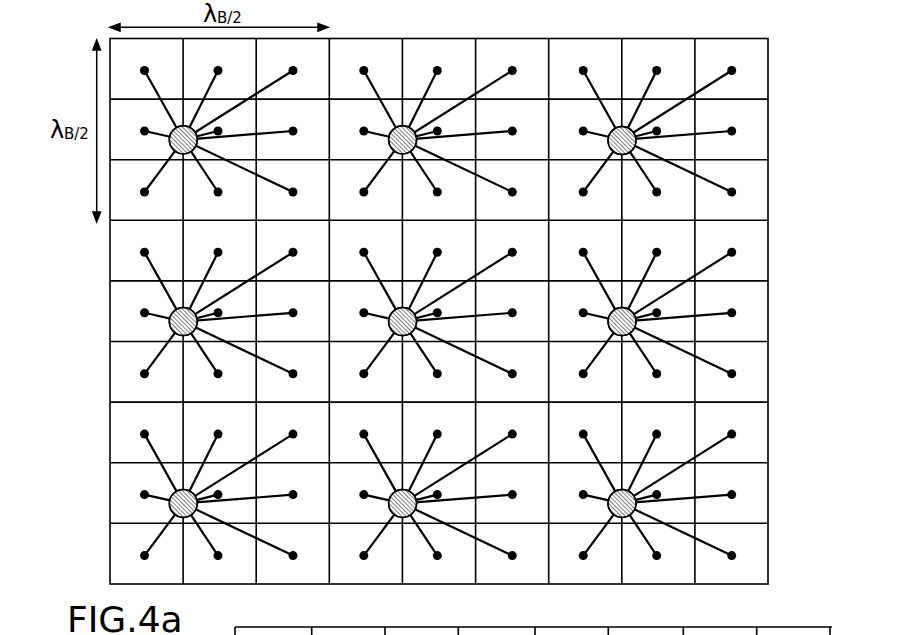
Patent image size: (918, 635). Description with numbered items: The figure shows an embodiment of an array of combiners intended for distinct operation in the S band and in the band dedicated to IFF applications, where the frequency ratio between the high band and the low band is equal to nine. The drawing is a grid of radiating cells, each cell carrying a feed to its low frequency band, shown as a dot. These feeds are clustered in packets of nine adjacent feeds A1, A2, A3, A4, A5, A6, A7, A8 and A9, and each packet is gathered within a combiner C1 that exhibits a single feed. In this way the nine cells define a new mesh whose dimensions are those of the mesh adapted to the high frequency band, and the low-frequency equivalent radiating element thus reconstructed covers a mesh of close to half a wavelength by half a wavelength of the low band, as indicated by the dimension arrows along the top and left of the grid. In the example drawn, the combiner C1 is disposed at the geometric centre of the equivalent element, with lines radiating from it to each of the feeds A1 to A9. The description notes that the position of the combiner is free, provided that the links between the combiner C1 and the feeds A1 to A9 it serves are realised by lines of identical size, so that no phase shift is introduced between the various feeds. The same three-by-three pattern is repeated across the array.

The feed to the low frequency band of a radiating cell A1 is at (605, 62).
The feed to the low frequency band of a radiating cell A2 is at (683, 63).
The feed to the low frequency band of a radiating cell A3 is at (753, 62).
The feed to the low frequency band of a radiating cell A4 is at (732, 131).
The feed to the low frequency band of a radiating cell A5 is at (732, 192).
The feed to the low frequency band of a radiating cell A6 is at (657, 192).
The feed to the low frequency band of a radiating cell A7 is at (583, 192).
The feed to the low frequency band of a radiating cell A8 is at (583, 131).
The feed to the low frequency band of a radiating cell A9 is at (657, 131).
The combiner C1 is at (636, 142).